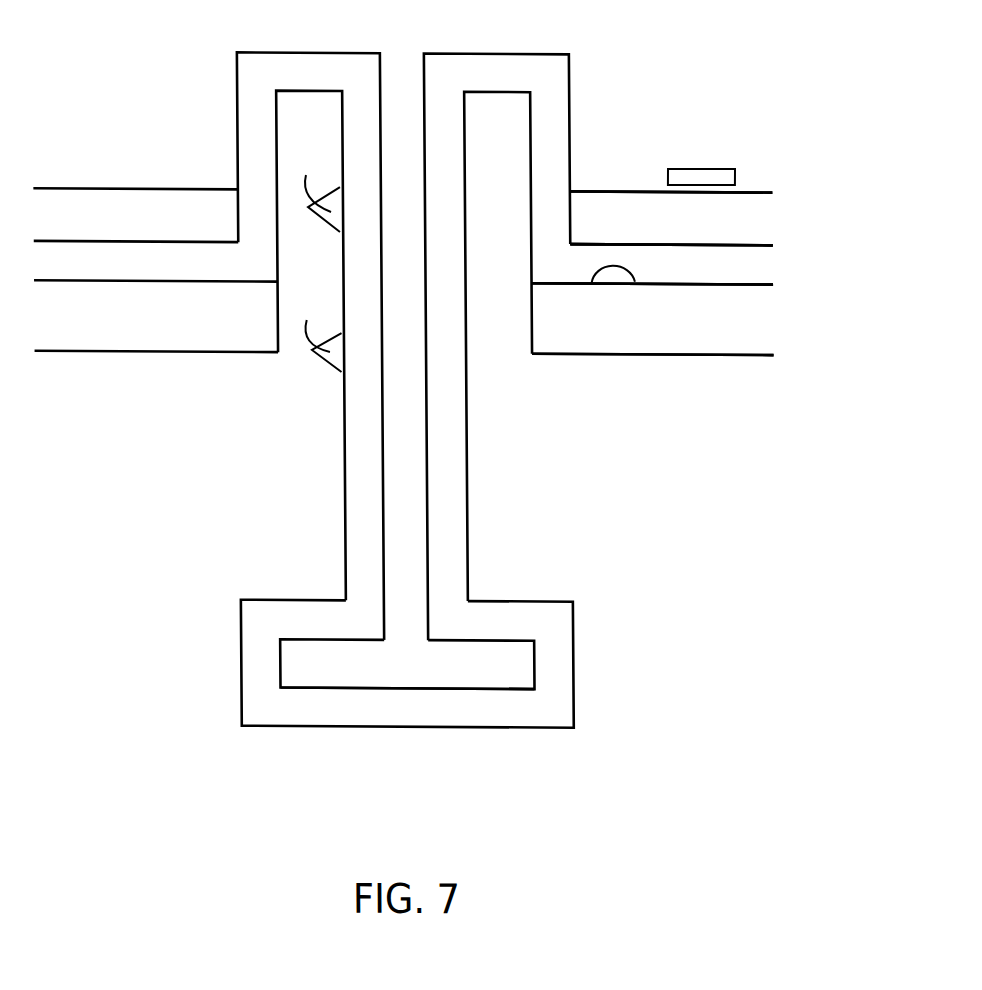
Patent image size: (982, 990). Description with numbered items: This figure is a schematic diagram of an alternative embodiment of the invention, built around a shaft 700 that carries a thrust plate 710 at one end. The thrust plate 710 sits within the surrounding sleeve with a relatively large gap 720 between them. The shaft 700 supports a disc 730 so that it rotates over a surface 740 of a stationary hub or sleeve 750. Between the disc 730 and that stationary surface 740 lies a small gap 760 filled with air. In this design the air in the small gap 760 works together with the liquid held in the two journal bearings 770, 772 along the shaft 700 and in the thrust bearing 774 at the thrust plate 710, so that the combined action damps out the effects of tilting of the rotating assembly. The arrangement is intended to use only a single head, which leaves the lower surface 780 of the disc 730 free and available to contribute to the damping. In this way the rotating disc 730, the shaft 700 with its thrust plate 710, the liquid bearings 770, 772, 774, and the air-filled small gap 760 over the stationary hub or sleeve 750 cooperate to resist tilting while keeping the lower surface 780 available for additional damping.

The shaft 700 is at (396, 476).
The thrust plate 710 is at (503, 662).
The gap 720 is at (322, 705).
The disc 730 is at (733, 216).
The surface 740 is at (590, 279).
The stationary hub or sleeve 750 is at (740, 326).
The small gap 760 is at (736, 261).
The journal bearing 770 is at (311, 184).
The journal bearing 772 is at (312, 328).
The thrust bearing 774 is at (378, 688).
The lower surface 780 is at (670, 242).